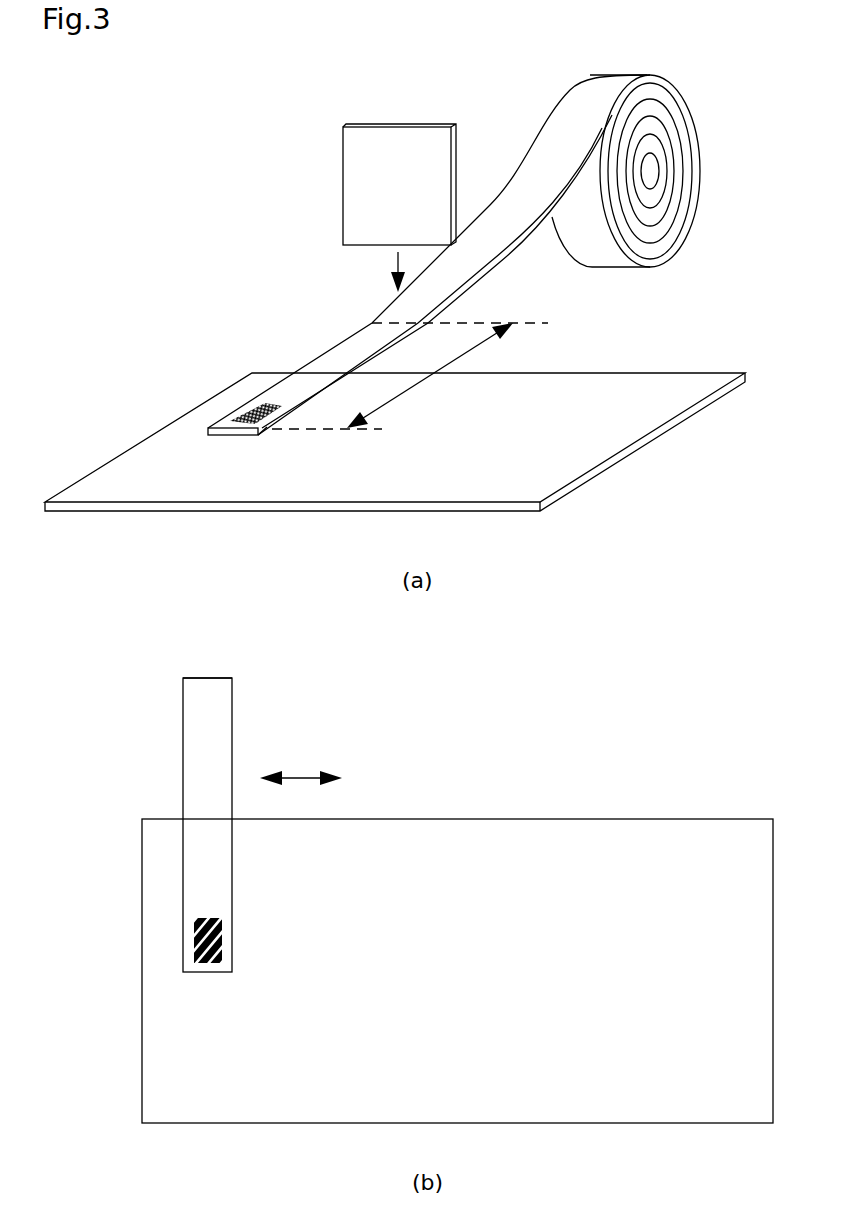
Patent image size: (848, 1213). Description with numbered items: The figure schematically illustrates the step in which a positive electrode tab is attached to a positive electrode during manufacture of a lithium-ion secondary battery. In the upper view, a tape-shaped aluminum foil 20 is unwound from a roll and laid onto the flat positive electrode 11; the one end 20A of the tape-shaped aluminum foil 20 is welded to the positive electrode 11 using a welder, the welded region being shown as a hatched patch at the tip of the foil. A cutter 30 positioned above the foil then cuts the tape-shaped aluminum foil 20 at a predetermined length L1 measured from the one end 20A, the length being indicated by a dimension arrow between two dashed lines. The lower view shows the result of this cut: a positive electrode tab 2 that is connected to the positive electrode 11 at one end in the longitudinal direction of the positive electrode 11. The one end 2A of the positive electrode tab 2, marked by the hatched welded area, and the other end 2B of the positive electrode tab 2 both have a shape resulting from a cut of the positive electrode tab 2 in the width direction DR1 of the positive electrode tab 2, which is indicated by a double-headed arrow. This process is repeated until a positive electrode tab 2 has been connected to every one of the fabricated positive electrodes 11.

The positive electrode 11 is at (683, 413).
The tape-shaped aluminum foil 20 is at (682, 123).
The one end of the tape-shaped aluminum foil 20A is at (217, 420).
The cutter 30 is at (353, 178).
The predetermined length L1 is at (410, 376).
The positive electrode tab 2 is at (193, 734).
The other end of the positive electrode tab 2B is at (190, 689).
The one end of the positive electrode tab 2A is at (190, 963).
The width direction DR1 is at (301, 764).